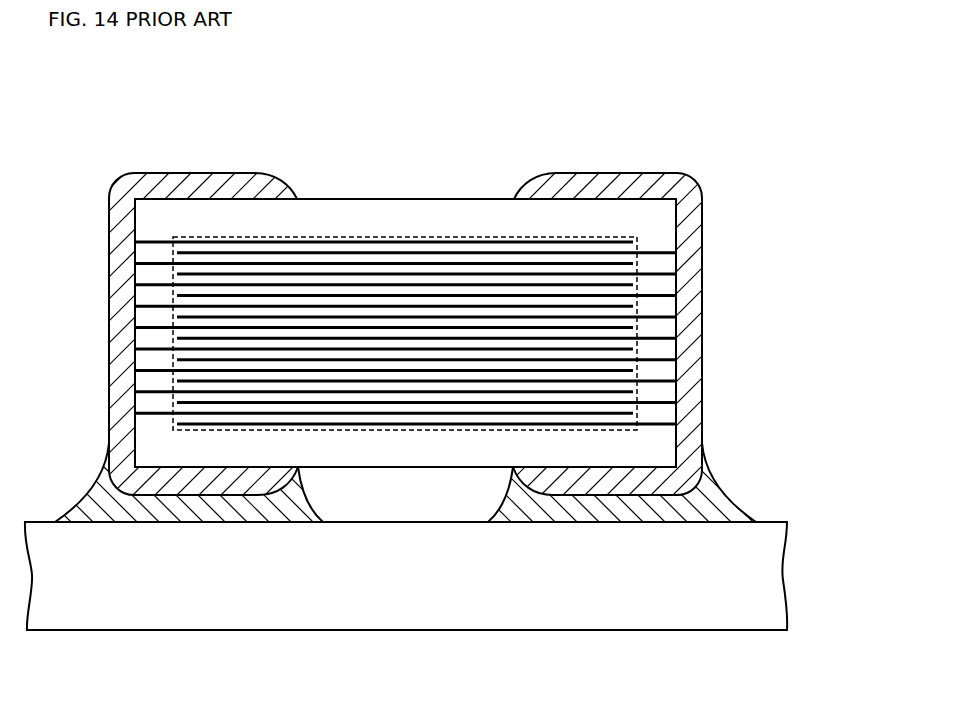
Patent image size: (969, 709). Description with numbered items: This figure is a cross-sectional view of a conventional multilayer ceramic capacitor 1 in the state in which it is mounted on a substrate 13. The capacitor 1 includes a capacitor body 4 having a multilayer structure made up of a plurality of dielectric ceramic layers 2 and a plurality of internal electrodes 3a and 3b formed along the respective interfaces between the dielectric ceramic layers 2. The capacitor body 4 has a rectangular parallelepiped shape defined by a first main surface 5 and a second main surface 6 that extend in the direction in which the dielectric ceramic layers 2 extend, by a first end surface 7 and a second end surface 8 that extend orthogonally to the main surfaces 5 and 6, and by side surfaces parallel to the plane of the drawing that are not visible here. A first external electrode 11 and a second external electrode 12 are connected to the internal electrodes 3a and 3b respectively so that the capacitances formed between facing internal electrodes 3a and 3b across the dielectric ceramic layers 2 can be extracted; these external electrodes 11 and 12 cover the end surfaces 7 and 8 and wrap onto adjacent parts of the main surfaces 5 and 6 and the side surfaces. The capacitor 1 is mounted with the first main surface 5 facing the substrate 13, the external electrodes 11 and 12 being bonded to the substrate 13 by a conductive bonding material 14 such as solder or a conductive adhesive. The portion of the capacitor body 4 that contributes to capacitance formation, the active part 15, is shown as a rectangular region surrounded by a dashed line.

The multilayer ceramic capacitor 1 is at (137, 145).
The dielectric ceramic layers 2 is at (462, 262).
The internal electrodes 3a is at (347, 285).
The internal electrodes 3b is at (400, 272).
The capacitor body 4 is at (499, 190).
The first main surface 5 is at (408, 467).
The second main surface 6 is at (405, 199).
The first end surface 7 is at (135, 310).
The second end surface 8 is at (676, 348).
The first external electrode 11 is at (109, 255).
The second external electrode 12 is at (695, 264).
The substrate 13 is at (772, 568).
The conductive bonding material 14 is at (82, 500).
The active part 15 is at (570, 227).